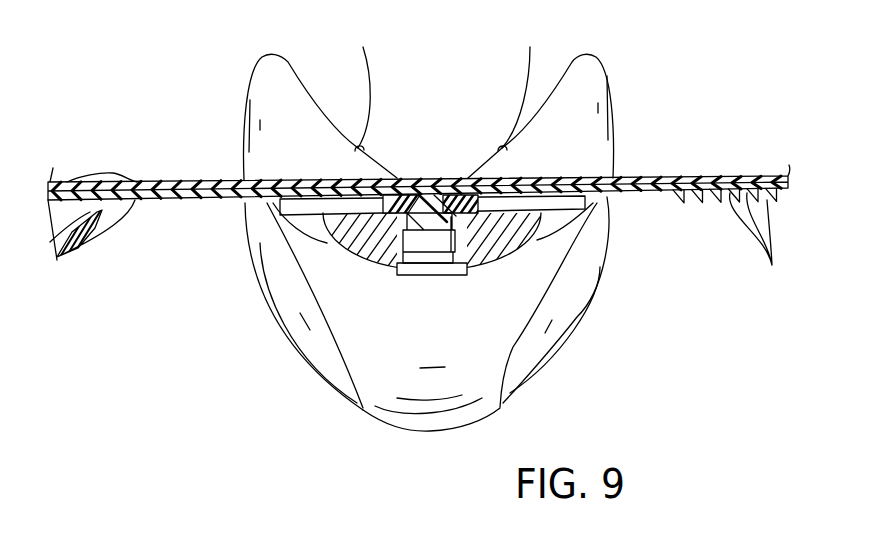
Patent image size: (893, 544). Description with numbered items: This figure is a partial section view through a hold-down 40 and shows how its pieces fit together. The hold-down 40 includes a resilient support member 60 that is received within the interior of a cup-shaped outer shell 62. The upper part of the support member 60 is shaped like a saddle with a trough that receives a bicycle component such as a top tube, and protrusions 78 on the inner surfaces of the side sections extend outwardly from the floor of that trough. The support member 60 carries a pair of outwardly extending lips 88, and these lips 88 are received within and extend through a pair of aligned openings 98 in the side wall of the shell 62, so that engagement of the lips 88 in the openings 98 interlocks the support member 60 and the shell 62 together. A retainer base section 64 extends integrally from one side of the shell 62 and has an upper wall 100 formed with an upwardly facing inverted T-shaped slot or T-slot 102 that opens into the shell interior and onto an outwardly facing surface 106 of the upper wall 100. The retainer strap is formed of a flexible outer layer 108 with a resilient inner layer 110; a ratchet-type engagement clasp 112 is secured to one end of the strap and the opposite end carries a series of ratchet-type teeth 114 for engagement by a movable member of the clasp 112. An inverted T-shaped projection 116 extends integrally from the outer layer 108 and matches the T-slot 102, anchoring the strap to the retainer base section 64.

The hold-down 40 is at (223, 98).
The support member 60 is at (608, 59).
The shell 62 is at (403, 430).
The retainer base section 64 is at (323, 249).
The protrusions 78 is at (447, 83).
The lips 88 is at (285, 300).
The openings 98 is at (352, 363).
The upper wall 100 is at (401, 200).
The T-slot 102 is at (441, 224).
The outwardly facing surface 106 is at (467, 200).
The outer layer 108 is at (644, 193).
The inner layer 110 is at (675, 177).
The engagement clasp 112 is at (85, 245).
The ratchet-type teeth 114 is at (763, 247).
The projection 116 is at (438, 222).